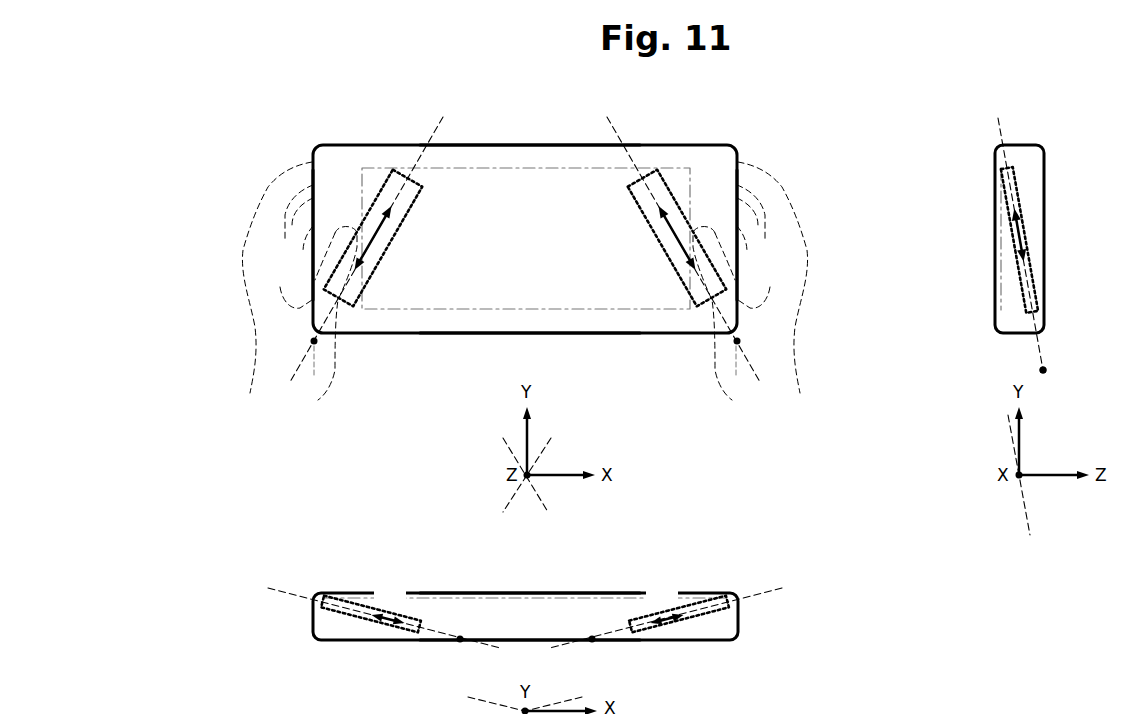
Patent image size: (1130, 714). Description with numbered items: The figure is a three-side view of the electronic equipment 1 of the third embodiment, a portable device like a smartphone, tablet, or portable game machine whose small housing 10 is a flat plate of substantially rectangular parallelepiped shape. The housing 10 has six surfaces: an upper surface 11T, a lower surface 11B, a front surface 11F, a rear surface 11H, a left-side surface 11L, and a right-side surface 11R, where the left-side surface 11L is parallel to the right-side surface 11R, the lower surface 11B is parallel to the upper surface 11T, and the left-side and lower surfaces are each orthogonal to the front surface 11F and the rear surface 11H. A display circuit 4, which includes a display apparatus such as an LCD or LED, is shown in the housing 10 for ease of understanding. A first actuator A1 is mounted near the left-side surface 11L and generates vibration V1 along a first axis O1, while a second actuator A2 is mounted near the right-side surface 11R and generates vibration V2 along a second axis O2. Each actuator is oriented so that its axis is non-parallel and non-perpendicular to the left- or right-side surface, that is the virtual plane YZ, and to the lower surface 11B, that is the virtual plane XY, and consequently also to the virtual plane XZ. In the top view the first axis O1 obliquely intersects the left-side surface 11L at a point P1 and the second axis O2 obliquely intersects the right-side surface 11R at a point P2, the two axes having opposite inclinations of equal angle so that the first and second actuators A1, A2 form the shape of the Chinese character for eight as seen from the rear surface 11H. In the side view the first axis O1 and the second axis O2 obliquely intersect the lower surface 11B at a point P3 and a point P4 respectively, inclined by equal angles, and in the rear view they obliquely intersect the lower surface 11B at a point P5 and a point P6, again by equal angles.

The electronic equipment 1 is at (312, 121).
The housing 10 is at (713, 145).
The display circuit 4 is at (433, 311).
The left-side surface 11L is at (313, 173).
The right-side surface 11R is at (737, 173).
The upper surface 11T is at (505, 167).
The front surface 11F is at (560, 145).
The rear surface 11H is at (573, 334).
The lower surface 11B is at (1045, 309).
The first actuator A1 is at (383, 180).
The second actuator A2 is at (668, 180).
The vibration V1 is at (690, 415).
The vibration V2 is at (675, 415).
The first axis O1 is at (655, 406).
The second axis O2 is at (642, 406).
The point P1 is at (300, 342).
The point P2 is at (753, 342).
The point P3 is at (1070, 370).
The point P4 is at (1043, 370).
The point P5 is at (452, 654).
The point P6 is at (600, 654).